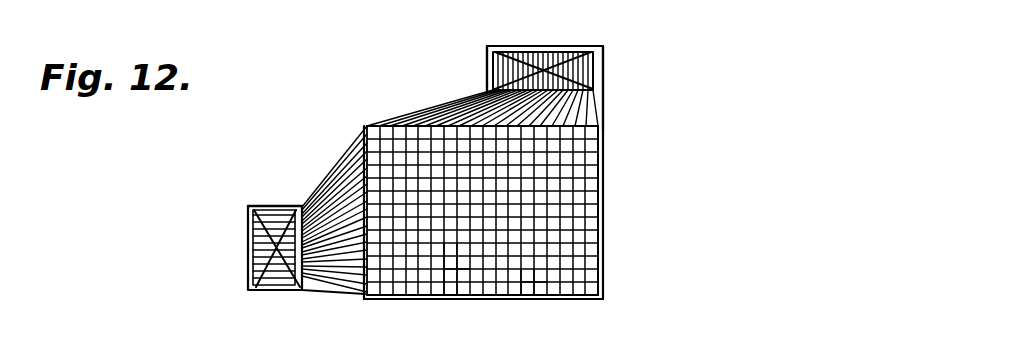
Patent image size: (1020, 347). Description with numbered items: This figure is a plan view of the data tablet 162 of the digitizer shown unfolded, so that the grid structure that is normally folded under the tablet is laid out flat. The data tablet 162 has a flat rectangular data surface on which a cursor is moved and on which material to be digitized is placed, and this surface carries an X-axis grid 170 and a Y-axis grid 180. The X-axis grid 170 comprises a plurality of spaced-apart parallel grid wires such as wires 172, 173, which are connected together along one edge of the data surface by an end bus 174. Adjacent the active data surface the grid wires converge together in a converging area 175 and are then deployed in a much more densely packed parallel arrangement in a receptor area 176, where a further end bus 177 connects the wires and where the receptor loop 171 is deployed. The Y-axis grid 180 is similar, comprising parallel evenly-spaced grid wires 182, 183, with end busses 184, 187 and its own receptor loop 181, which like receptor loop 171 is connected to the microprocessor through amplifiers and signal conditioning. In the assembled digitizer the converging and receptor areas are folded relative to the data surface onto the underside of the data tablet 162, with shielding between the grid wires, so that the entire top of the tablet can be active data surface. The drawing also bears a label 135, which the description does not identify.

The data tablet 162 is at (636, 181).
The X-axis grid 170 is at (430, 98).
The receptor loop 171 is at (512, 73).
The grid wire 172 is at (573, 225).
The grid wire 173 is at (587, 265).
The end bus 174 is at (497, 300).
The converging area 175 is at (580, 112).
The receptor area 176 is at (602, 78).
The end bus 177 is at (556, 46).
The Y-axis grid 180 is at (314, 172).
The receptor loop 181 is at (280, 205).
The grid wire 182 is at (453, 253).
The grid wire 183 is at (525, 280).
The end bus 184 is at (601, 153).
The end bus 187 is at (248, 257).
The transition duct 135 is at (353, 168).